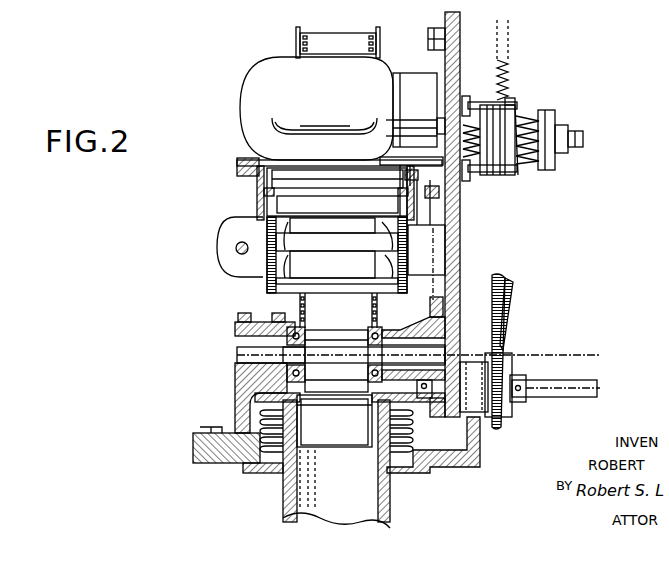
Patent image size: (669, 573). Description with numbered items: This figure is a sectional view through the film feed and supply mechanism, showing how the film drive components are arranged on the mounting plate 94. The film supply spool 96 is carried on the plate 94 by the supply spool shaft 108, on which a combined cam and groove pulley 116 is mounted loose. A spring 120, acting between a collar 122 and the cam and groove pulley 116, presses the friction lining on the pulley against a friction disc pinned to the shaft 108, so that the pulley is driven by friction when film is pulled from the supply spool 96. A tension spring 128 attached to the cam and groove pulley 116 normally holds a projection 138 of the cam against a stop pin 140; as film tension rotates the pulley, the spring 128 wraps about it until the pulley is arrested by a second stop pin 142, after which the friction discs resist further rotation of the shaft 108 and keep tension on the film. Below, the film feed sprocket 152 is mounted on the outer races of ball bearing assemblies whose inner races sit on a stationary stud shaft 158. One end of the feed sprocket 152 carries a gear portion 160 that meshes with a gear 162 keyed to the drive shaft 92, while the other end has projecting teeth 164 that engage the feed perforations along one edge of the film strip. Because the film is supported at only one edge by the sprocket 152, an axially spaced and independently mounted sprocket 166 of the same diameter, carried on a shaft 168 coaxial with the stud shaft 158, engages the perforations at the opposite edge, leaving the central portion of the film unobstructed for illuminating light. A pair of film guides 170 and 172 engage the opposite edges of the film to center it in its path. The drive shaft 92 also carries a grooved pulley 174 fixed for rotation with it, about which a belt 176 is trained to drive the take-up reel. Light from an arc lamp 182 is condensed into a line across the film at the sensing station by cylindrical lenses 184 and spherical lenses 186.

The drive shaft 92 is at (551, 394).
The plate 94 is at (461, 21).
The film supply spool 96 is at (296, 45).
The supply spool shaft 108 is at (583, 141).
The cam and groove pulley 116 is at (517, 165).
The spring 120 is at (526, 118).
The collar 122 is at (557, 120).
The tension spring 128 is at (508, 82).
The projection 138 is at (517, 107).
The stop pin 140 is at (477, 100).
The stop pin 142 is at (475, 178).
The film feed sprocket 152 is at (404, 384).
The stationary stud shaft 158 is at (445, 356).
The gear portion 160 is at (441, 325).
The gear 162 is at (455, 418).
The projecting teeth 164 is at (358, 396).
The sprocket 166 is at (300, 384).
The shaft 168 is at (237, 352).
The film guide 170 is at (381, 333).
The film guide 172 is at (257, 325).
The grooved pulley 174 is at (515, 365).
The belt 176 is at (513, 300).
The arc lamp 182 is at (257, 118).
The cylindrical lens 184 is at (276, 211).
The spherical lens 186 is at (281, 243).